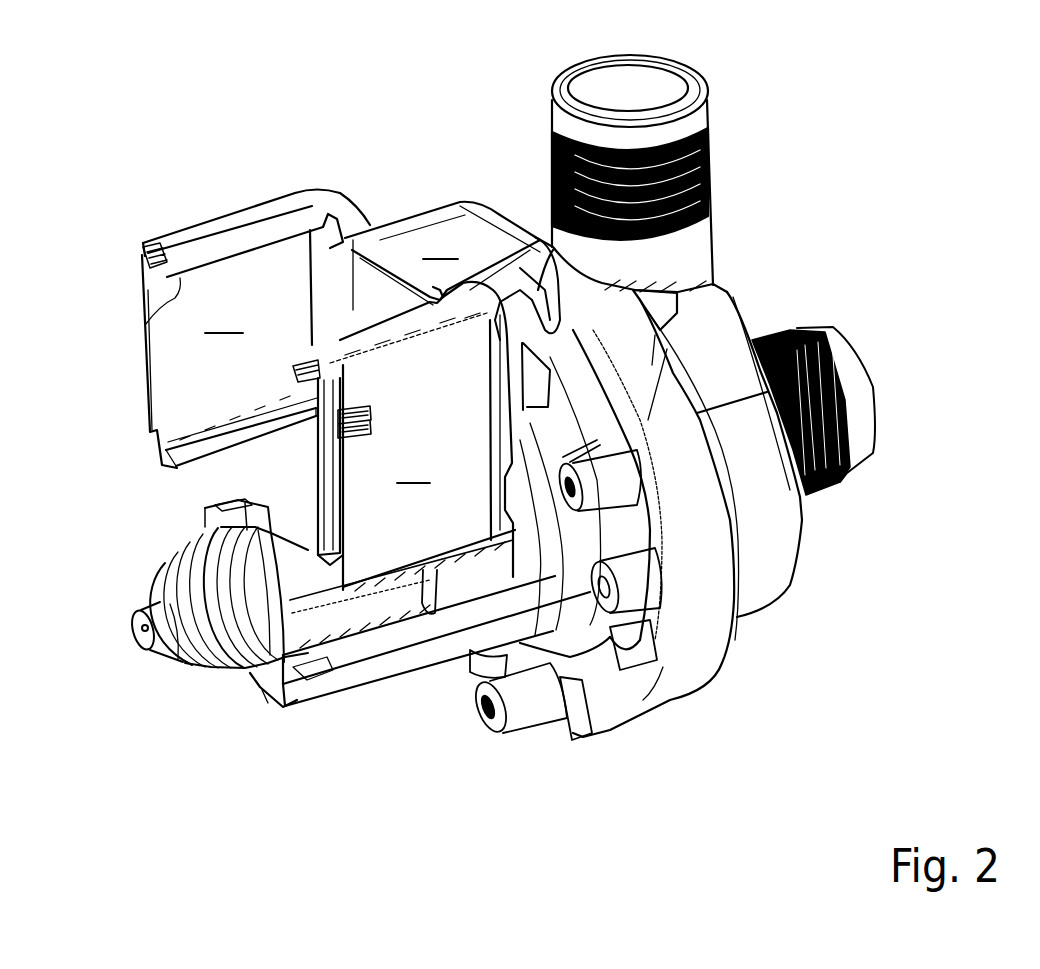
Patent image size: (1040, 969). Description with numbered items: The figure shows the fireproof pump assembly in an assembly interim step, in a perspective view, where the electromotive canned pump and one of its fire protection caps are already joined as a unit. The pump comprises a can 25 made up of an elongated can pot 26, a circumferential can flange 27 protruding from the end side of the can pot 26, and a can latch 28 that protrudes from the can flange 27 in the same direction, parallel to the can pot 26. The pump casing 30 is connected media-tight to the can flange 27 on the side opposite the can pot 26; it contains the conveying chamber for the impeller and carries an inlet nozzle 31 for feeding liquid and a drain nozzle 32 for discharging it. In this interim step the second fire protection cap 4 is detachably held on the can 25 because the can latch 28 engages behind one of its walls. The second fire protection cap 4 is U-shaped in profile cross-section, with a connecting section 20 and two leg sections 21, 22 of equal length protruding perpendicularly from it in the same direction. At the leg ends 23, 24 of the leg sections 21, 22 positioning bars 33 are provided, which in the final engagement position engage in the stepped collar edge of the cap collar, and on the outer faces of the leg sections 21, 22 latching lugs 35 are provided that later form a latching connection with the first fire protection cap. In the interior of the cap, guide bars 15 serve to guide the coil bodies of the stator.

The second fire protection cap 4 is at (102, 218).
The guide bars 15 is at (142, 288).
The connecting section 20 is at (372, 285).
The leg section 21 is at (256, 329).
The leg section 22 is at (402, 441).
The leg end 23 is at (140, 470).
The leg end 24 is at (302, 505).
The can 25 is at (422, 718).
The can pot 26 is at (230, 637).
The can flange 27 is at (548, 328).
The can latch 28 is at (442, 253).
The pump casing 30 is at (693, 650).
The inlet nozzle 31 is at (840, 358).
The drain nozzle 32 is at (708, 160).
The positioning bars 33 is at (143, 262).
The latching lugs 35 is at (367, 418).